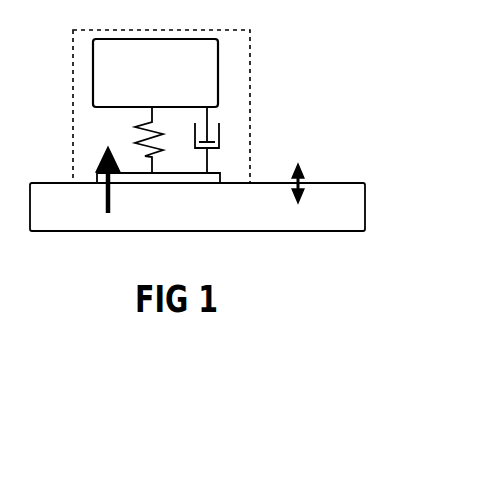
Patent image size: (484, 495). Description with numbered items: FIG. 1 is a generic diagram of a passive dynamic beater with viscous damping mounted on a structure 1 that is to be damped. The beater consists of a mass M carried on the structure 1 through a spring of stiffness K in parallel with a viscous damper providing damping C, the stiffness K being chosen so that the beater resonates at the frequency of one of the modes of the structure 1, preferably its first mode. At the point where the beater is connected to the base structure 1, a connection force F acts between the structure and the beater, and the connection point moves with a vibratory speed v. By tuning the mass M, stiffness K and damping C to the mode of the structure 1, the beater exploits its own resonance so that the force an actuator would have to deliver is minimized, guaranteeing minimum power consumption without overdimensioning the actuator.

The structure 1 is at (337, 218).
The mass M is at (155, 73).
The stiffness K is at (142, 140).
The viscous damping C is at (198, 140).
The connection force F is at (99, 180).
The vibratory speed v is at (311, 183).